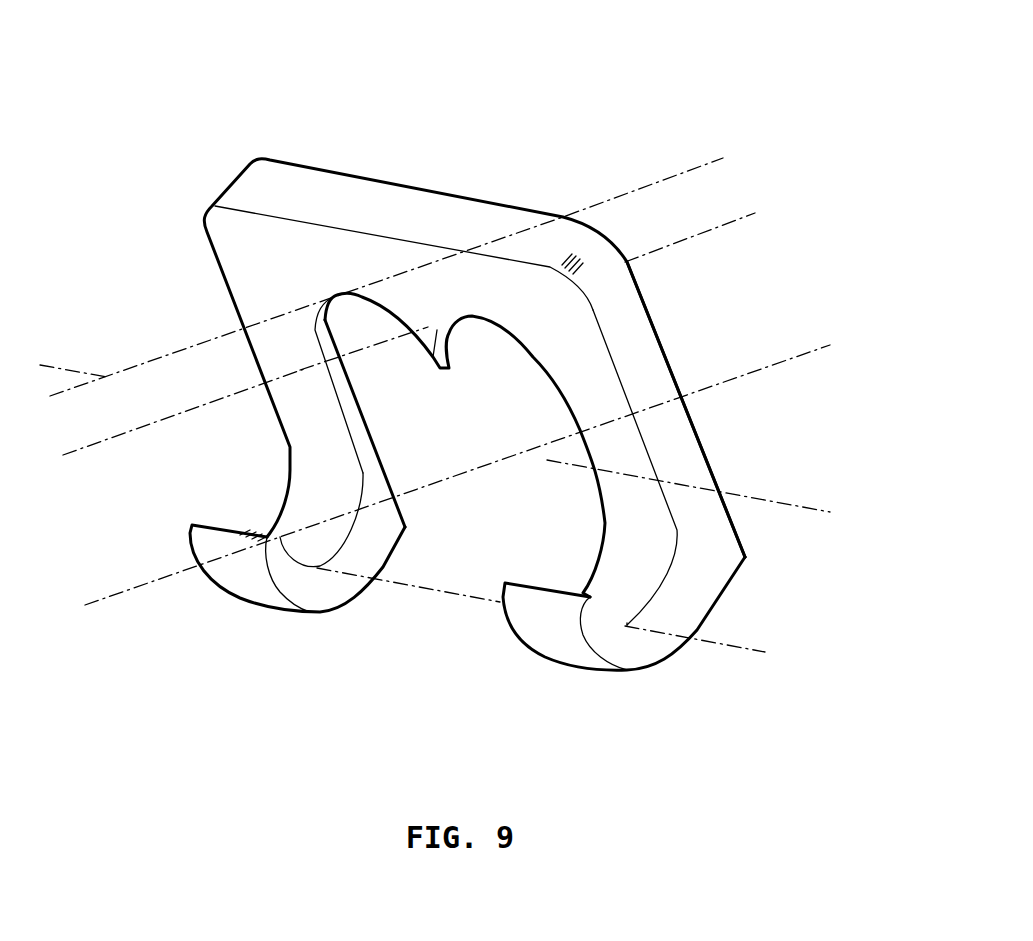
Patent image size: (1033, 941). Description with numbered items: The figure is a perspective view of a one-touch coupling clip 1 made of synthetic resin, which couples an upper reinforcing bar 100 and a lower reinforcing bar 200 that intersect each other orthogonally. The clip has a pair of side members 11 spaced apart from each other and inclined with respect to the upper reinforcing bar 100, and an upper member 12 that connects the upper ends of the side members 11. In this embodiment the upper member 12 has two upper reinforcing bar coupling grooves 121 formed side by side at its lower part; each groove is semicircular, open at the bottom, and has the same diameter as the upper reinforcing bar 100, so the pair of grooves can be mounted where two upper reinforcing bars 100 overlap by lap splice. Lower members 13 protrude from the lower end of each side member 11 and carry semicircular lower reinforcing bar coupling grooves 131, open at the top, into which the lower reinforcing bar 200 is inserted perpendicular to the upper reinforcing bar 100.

The one-touch coupling clip 1 is at (212, 170).
The side member 11 is at (270, 398).
The upper member 12 is at (387, 205).
The upper reinforcing bar coupling groove 121 is at (358, 297).
The lower member 13 is at (273, 607).
The lower reinforcing bar coupling groove 131 is at (613, 563).
The upper reinforcing bar 100 is at (628, 193).
The lower reinforcing bar 200 is at (758, 650).